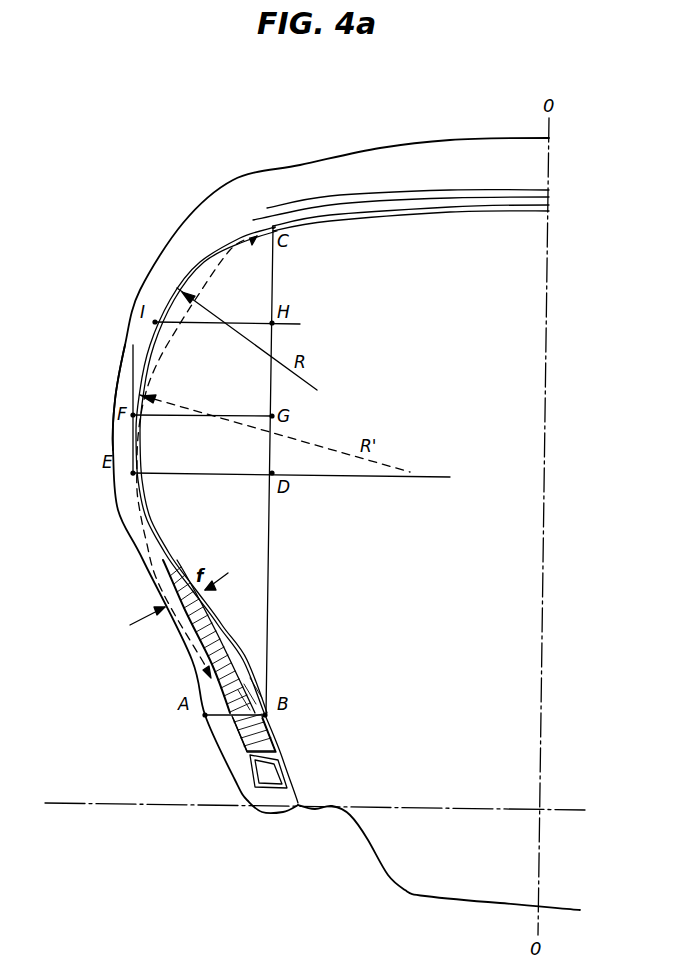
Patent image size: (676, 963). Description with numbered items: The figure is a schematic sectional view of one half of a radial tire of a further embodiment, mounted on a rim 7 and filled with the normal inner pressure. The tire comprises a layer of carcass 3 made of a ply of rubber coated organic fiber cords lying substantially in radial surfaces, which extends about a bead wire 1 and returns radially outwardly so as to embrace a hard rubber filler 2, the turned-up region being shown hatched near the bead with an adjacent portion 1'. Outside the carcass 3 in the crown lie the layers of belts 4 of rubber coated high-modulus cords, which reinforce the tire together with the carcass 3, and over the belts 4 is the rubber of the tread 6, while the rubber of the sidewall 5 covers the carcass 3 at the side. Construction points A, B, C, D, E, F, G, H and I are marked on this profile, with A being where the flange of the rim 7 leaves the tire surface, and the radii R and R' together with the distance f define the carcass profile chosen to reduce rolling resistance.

The bead wire 1 is at (284, 771).
The bead filler 1' is at (237, 749).
The hard rubber filler 2 is at (240, 672).
The carcass 3 is at (460, 210).
The belt 4 is at (295, 212).
The sidewall 5 is at (125, 383).
The tread 6 is at (435, 160).
The rim 7 is at (370, 842).